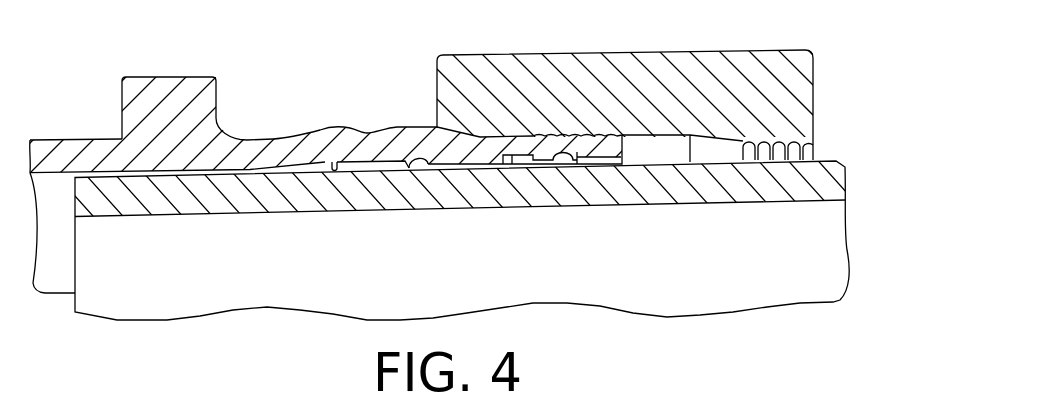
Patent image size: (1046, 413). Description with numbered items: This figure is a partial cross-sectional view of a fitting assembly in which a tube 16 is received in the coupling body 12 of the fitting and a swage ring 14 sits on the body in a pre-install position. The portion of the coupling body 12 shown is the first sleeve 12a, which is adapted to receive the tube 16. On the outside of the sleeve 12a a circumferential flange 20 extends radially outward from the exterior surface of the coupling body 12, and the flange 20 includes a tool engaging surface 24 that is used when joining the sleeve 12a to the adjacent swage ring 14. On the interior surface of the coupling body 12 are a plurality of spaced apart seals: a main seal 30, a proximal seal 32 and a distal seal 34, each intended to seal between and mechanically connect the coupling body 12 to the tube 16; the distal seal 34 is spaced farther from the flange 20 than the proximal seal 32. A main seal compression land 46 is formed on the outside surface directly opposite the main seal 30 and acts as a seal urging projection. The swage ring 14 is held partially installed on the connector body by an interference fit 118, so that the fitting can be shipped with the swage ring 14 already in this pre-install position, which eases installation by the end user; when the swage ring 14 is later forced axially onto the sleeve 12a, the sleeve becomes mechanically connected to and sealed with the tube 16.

The coupling body 12 is at (243, 93).
The first sleeve 12a is at (278, 147).
The swage ring 14 is at (677, 62).
The tube 16 is at (470, 193).
The circumferential flange 20 is at (165, 76).
The tool engaging surface 24 is at (122, 100).
The main seal 30 is at (417, 174).
The proximal seal 32 is at (332, 180).
The distal seal 34 is at (572, 175).
The main seal compression land 46 is at (416, 124).
The interference fit 118 is at (535, 130).